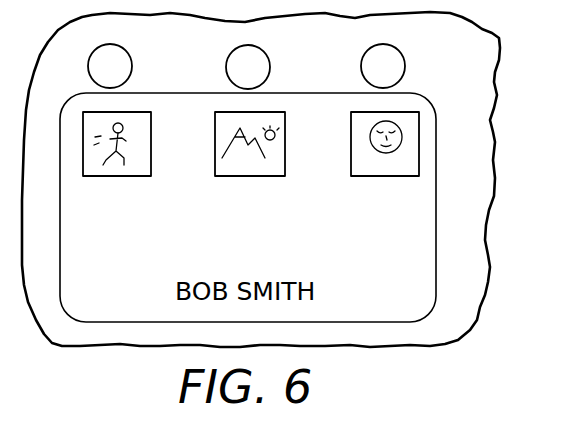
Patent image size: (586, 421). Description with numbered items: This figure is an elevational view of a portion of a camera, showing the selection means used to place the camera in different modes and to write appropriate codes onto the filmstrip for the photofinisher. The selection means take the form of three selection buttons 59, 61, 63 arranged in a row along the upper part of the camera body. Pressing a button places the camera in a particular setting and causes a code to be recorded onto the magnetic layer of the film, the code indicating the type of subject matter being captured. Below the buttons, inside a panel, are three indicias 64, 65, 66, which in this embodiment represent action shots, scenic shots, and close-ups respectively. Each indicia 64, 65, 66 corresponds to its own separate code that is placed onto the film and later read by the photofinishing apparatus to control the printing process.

The selection button 59 is at (131, 61).
The selection button 61 is at (266, 59).
The selection button 63 is at (398, 61).
The indicia 64 is at (117, 177).
The indicia 65 is at (259, 177).
The indicia 66 is at (391, 177).